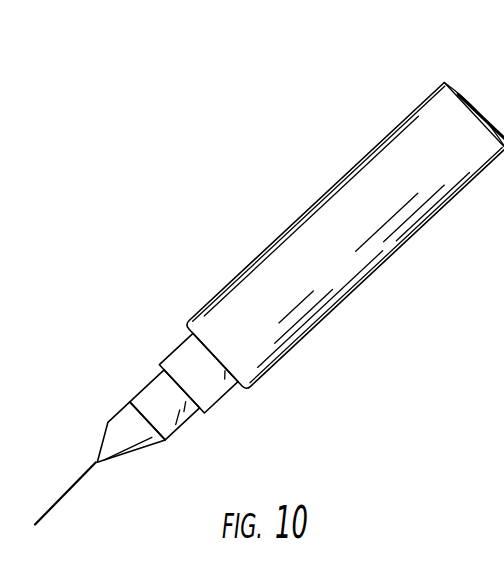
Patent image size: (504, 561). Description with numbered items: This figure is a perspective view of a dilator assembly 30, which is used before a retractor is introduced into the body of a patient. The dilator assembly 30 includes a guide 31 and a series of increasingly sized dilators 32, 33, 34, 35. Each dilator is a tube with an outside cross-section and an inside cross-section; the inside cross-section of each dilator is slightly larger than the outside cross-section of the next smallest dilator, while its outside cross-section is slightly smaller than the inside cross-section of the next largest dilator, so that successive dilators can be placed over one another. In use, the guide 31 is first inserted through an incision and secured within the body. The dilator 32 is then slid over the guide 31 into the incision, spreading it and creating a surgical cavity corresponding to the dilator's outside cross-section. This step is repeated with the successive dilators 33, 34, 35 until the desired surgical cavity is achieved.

The dilator assembly 30 is at (228, 202).
The guide 31 is at (77, 480).
The dilator 32 is at (137, 443).
The dilator 33 is at (170, 413).
The dilator 34 is at (202, 376).
The dilator 35 is at (266, 325).